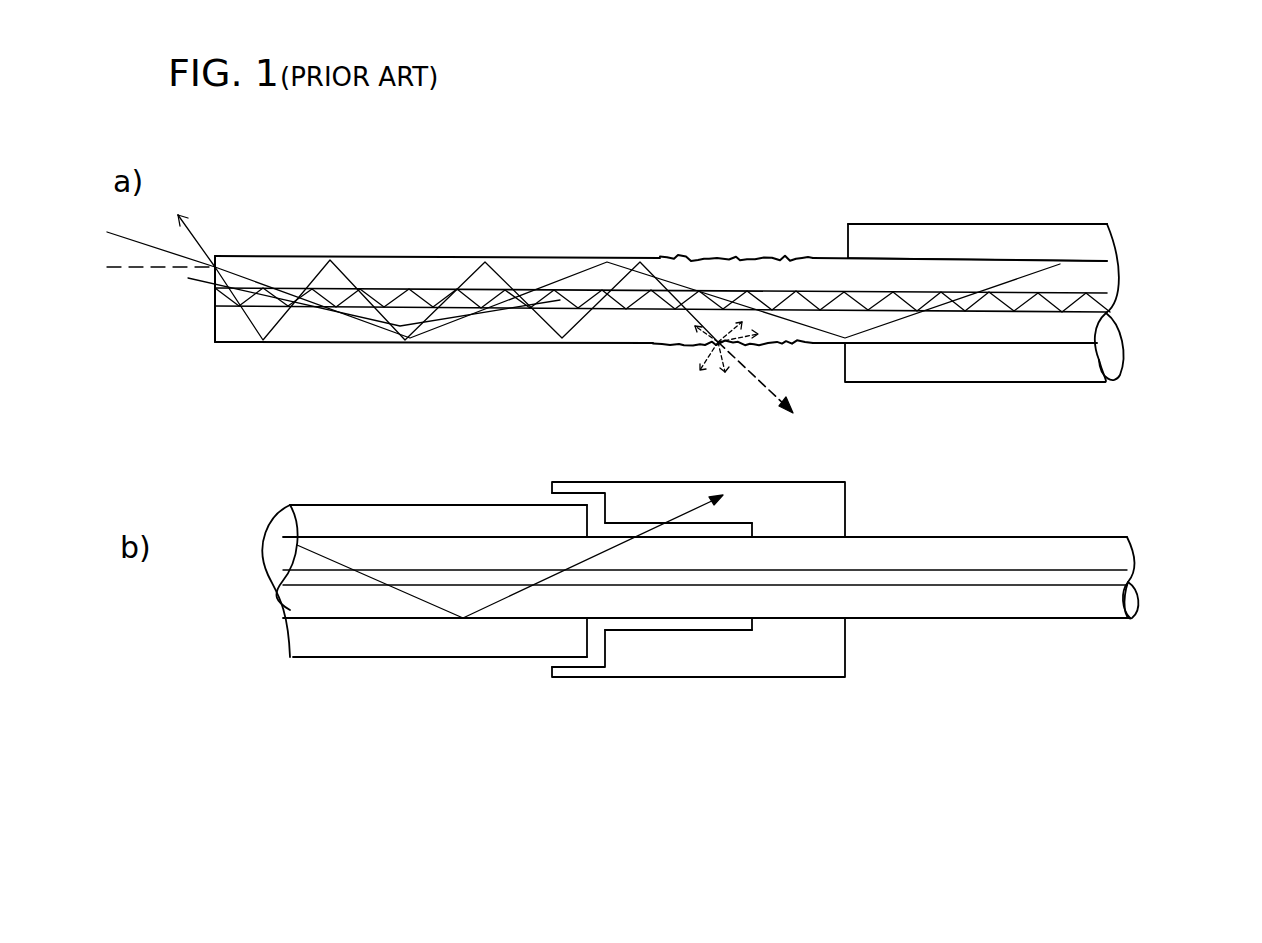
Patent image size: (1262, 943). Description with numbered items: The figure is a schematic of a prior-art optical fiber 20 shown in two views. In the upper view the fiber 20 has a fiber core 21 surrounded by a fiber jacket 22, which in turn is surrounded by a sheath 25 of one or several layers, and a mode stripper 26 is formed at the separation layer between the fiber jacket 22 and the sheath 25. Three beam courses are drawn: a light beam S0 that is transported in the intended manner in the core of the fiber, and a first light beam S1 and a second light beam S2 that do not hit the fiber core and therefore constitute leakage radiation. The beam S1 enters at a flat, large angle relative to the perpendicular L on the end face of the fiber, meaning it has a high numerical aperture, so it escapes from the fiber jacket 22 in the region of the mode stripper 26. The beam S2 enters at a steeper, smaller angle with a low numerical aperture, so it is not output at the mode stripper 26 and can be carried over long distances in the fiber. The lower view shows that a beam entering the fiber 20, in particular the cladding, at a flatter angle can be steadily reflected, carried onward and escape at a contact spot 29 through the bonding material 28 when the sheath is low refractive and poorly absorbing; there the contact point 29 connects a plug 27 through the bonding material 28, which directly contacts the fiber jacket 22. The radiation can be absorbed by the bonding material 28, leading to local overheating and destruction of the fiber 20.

The fiber 20 is at (984, 232).
The fiber core 21 is at (731, 264).
The fiber jacket 22 is at (726, 258).
The sheath 25 is at (1033, 192).
The mode stripper 26 is at (749, 261).
The plug 27 is at (686, 645).
The bonding material 28 is at (678, 658).
The contact spot 29 is at (725, 665).
The perpendicular L is at (576, 303).
The light beam S0 is at (203, 350).
The first light beam S1 is at (448, 232).
The second light beam S2 is at (346, 325).